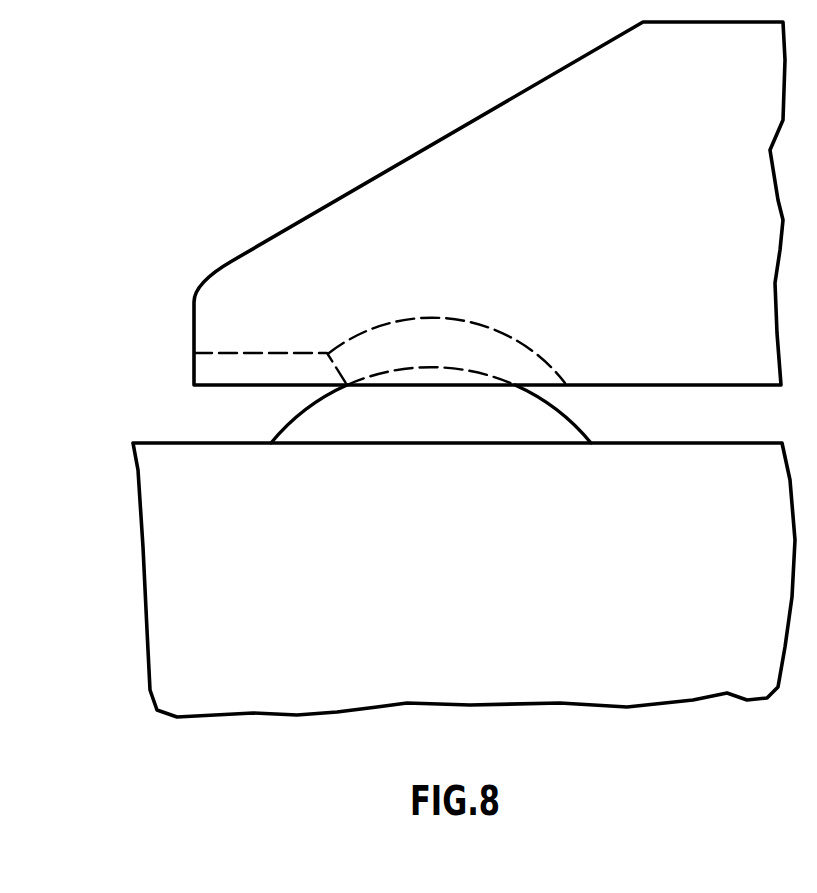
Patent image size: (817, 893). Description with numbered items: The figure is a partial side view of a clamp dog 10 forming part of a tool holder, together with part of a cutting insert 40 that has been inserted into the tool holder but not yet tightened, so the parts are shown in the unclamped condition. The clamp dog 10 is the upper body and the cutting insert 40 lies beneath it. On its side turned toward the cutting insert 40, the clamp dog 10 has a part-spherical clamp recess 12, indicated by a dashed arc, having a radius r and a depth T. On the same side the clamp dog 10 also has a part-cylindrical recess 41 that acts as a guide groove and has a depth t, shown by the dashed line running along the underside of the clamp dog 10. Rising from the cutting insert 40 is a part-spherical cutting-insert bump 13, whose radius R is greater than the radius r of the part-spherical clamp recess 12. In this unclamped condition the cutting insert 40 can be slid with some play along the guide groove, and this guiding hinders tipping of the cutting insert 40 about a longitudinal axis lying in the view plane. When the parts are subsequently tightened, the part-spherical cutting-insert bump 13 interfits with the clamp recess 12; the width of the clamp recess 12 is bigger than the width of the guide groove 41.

The clamp dog 10 is at (654, 141).
The part-spherical clamp recess 12 is at (497, 336).
The part-spherical cutting-insert bump 13 is at (450, 430).
The cutting insert 40 is at (473, 592).
The part-cylindrical recess 41 is at (263, 368).
The depth of the guide groove t is at (224, 303).
The depth of the clamp recess T is at (437, 373).
The radius of the clamp recess r is at (374, 330).
The radius of the cutting-insert bump R is at (335, 406).